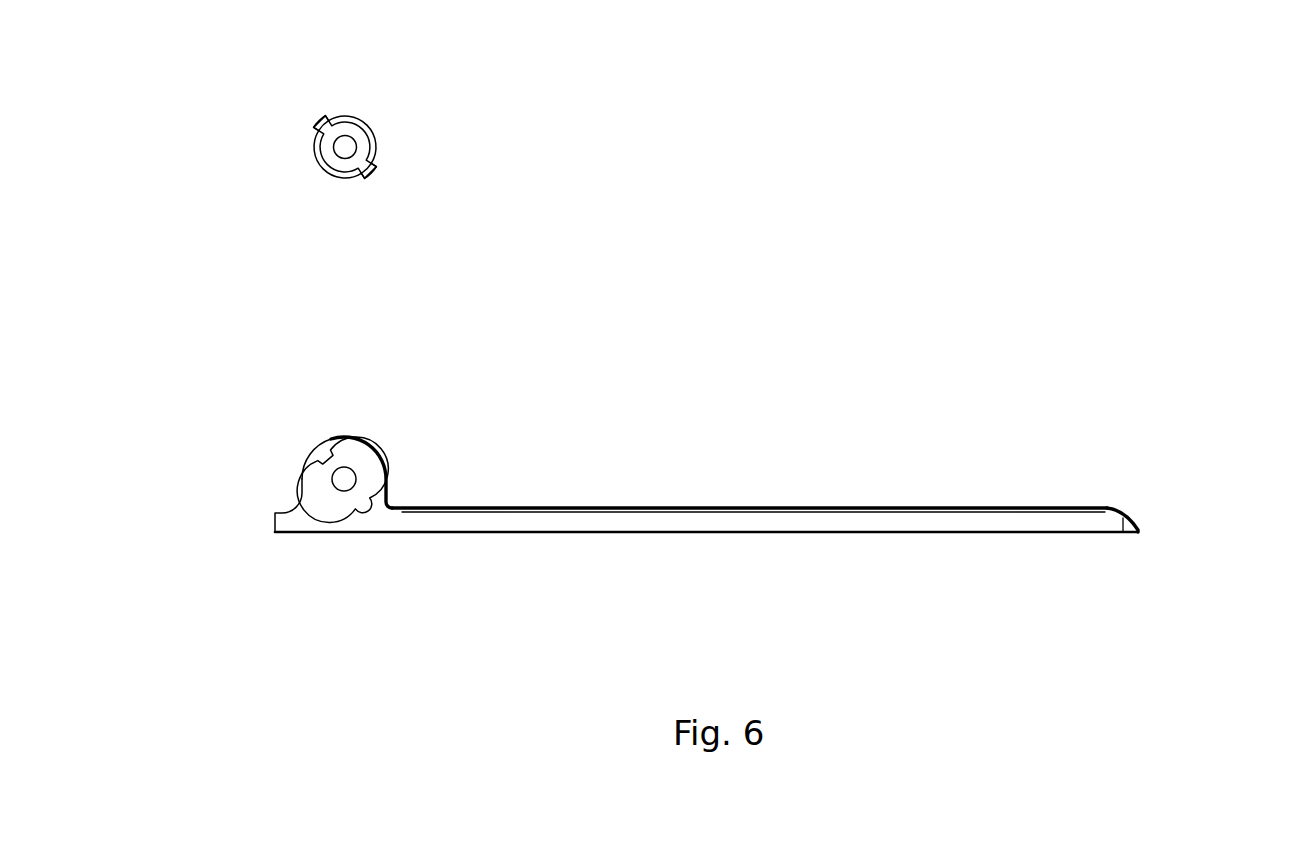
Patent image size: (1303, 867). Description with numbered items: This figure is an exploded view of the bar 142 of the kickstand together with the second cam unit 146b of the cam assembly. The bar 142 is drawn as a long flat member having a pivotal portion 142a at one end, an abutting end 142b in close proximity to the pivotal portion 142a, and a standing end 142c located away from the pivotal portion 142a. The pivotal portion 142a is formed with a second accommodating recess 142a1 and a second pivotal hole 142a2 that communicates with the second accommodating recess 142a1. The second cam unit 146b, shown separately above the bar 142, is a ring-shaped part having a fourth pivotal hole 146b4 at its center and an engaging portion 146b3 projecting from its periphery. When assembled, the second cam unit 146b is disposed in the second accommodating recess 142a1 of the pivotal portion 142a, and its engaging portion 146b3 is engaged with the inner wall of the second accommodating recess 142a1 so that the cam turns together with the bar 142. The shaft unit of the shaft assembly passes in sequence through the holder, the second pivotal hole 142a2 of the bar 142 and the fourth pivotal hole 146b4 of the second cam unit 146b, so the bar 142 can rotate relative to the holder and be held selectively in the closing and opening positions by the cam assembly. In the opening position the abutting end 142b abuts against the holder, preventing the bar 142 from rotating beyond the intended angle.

The bar 142 is at (708, 494).
The pivotal portion 142a is at (342, 436).
The second accommodating recess 142a1 is at (325, 482).
The second pivotal hole 142a2 is at (357, 467).
The abutting end 142b is at (275, 520).
The standing end 142c is at (1138, 525).
The second cam unit 146b is at (372, 130).
The engaging portion 146b3 is at (378, 173).
The fourth pivotal hole 146b4 is at (356, 130).